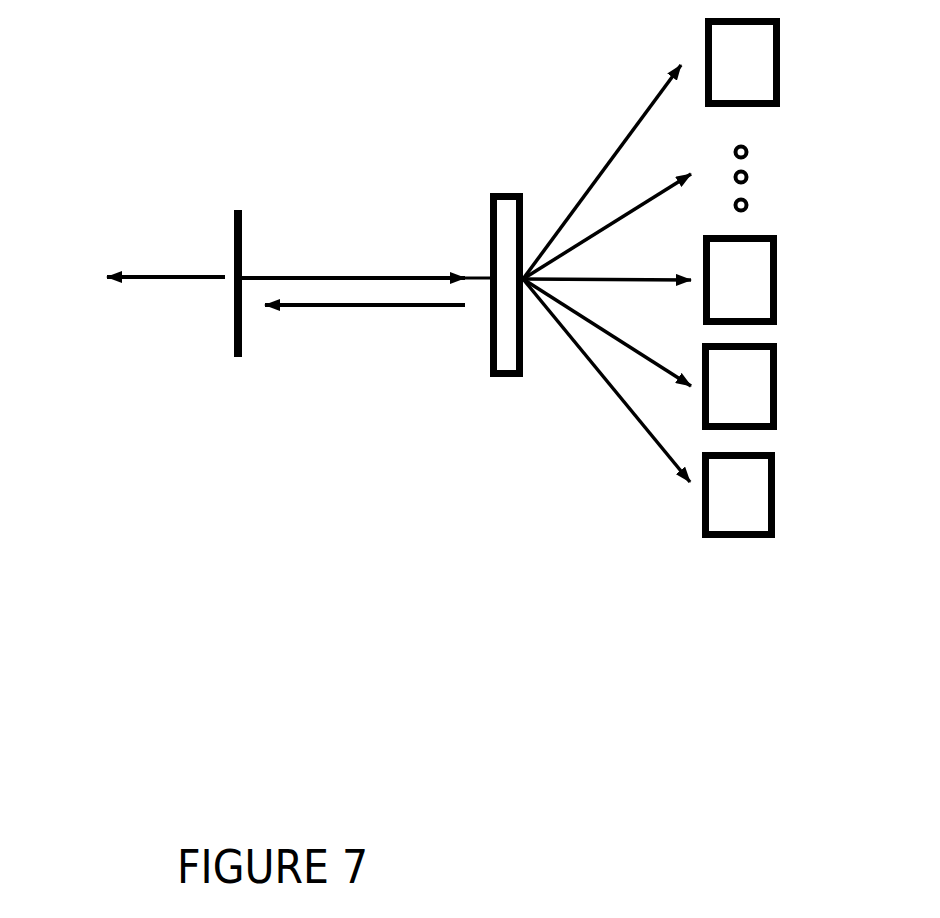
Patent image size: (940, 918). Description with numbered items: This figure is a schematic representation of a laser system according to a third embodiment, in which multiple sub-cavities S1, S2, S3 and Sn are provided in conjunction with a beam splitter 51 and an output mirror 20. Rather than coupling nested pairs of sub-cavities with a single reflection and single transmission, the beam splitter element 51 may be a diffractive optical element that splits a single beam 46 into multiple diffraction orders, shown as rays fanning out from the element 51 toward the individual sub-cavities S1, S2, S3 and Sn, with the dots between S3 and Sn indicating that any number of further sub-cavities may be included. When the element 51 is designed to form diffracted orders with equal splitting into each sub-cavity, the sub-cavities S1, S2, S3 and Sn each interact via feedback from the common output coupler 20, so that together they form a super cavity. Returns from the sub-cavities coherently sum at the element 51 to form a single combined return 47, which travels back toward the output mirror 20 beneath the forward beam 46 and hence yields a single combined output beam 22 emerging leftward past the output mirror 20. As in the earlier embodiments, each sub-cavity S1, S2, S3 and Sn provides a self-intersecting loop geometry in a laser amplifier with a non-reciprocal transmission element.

The output mirror 20 is at (239, 205).
The single combined output beam 22 is at (144, 245).
The single beam 46 is at (399, 263).
The single combined return 47 is at (371, 322).
The beam splitter 51 is at (479, 185).
The sub-cavity Sn is at (794, 63).
The sub-cavity S3 is at (789, 280).
The sub-cavity S2 is at (789, 388).
The sub-cavity S1 is at (785, 497).